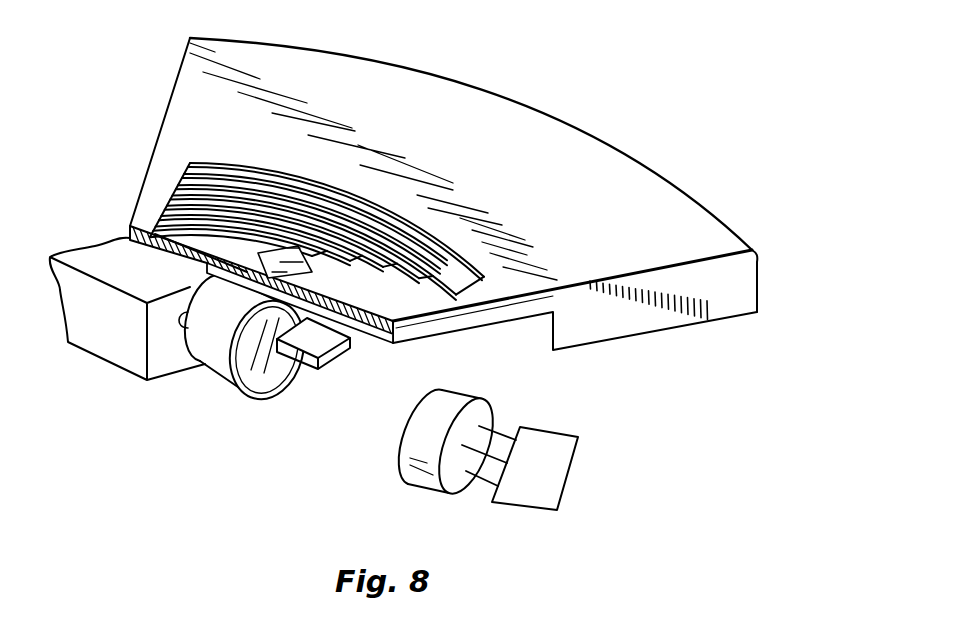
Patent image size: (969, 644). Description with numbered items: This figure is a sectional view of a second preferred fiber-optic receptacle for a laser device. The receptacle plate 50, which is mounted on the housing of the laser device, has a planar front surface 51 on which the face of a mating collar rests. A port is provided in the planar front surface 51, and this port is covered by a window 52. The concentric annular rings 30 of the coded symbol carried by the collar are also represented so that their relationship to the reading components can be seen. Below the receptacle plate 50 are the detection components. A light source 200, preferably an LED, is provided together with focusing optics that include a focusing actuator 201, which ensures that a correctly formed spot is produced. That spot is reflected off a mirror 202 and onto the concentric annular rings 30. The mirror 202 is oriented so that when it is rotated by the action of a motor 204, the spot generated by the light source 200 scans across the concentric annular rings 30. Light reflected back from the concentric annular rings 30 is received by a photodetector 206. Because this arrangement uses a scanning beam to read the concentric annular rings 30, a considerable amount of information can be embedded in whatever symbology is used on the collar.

The concentric annular rings 30 is at (218, 182).
The receptacle plate 50 is at (762, 285).
The planar front surface 51 is at (618, 183).
The window 52 is at (212, 343).
The light source 200 is at (446, 402).
The focusing actuator 201 is at (548, 455).
The mirror 202 is at (282, 378).
The motor 204 is at (107, 335).
The photodetector 206 is at (340, 356).